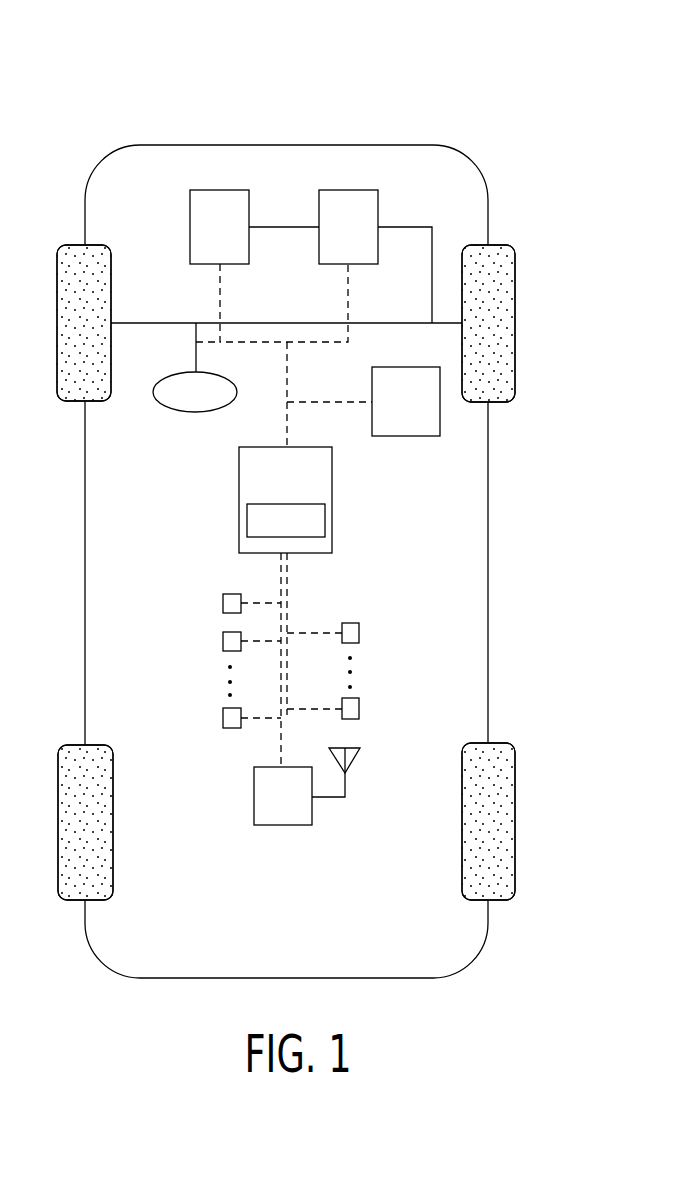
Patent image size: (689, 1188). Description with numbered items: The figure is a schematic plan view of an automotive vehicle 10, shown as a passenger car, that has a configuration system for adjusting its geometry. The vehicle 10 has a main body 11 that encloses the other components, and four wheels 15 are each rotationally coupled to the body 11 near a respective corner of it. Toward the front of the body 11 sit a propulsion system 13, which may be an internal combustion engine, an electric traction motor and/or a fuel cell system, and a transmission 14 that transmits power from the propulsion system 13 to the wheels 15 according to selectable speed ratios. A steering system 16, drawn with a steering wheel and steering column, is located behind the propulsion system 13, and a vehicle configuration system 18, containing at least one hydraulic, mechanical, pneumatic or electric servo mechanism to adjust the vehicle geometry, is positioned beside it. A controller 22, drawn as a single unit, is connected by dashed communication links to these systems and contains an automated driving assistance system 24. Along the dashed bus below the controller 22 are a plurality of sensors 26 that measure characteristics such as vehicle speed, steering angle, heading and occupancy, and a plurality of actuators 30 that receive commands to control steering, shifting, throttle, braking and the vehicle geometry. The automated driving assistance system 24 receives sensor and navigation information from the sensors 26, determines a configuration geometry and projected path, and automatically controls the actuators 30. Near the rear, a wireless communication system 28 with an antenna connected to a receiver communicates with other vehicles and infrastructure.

The automotive vehicle 10 is at (325, 66).
The body 11 is at (488, 562).
The propulsion system 13 is at (190, 222).
The transmission 14 is at (378, 207).
The wheels 15 is at (111, 283).
The steering system 16 is at (195, 412).
The vehicle configuration system 18 is at (400, 436).
The controller 22 is at (332, 492).
The automated driving assistance system 24 is at (305, 537).
The sensors 26 is at (223, 603).
The wireless communication system 28 is at (280, 825).
The actuators 30 is at (359, 633).